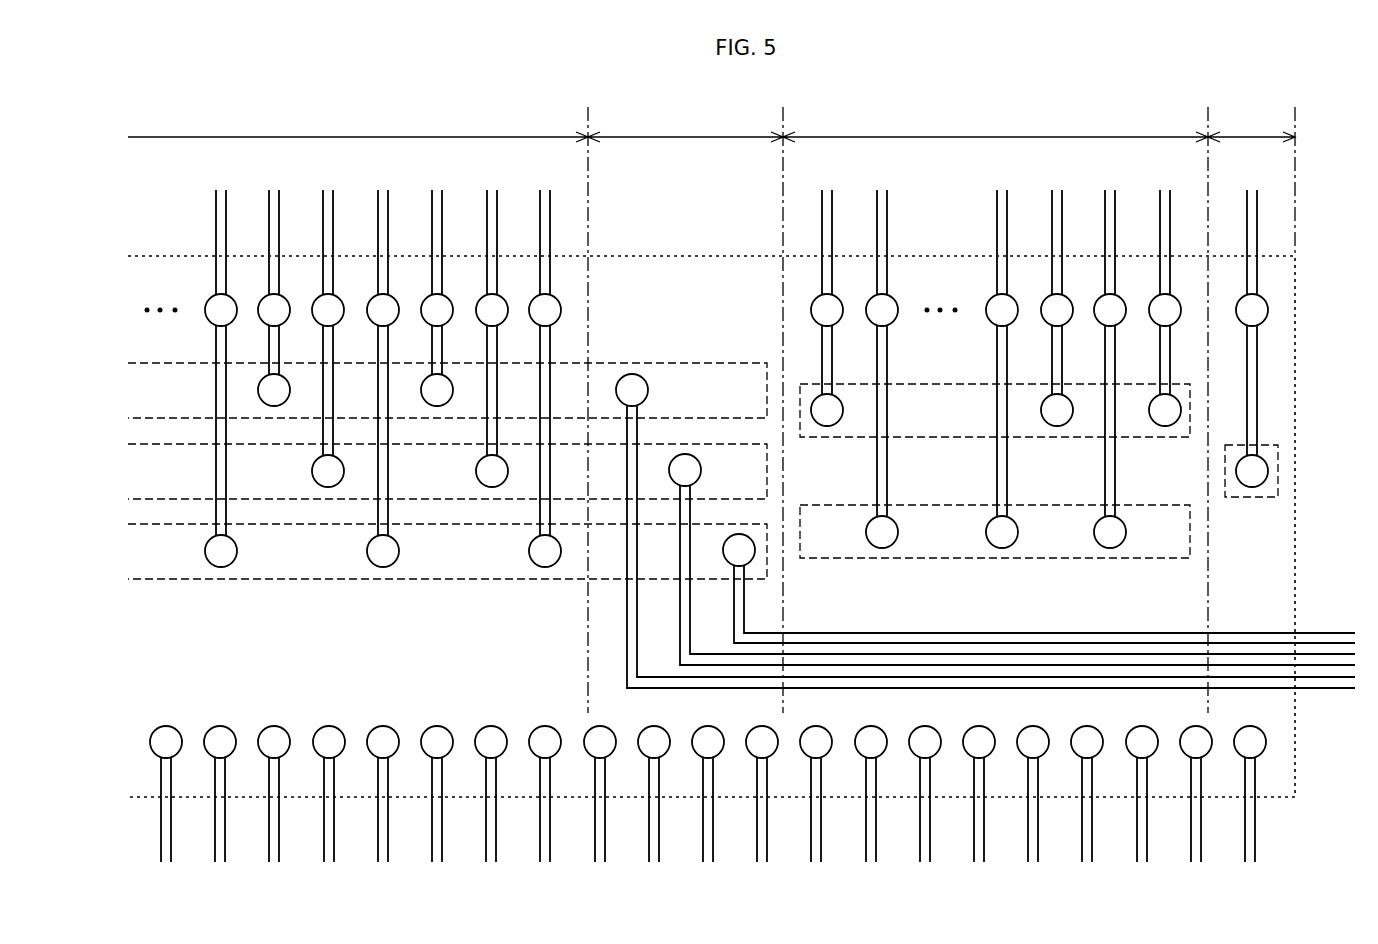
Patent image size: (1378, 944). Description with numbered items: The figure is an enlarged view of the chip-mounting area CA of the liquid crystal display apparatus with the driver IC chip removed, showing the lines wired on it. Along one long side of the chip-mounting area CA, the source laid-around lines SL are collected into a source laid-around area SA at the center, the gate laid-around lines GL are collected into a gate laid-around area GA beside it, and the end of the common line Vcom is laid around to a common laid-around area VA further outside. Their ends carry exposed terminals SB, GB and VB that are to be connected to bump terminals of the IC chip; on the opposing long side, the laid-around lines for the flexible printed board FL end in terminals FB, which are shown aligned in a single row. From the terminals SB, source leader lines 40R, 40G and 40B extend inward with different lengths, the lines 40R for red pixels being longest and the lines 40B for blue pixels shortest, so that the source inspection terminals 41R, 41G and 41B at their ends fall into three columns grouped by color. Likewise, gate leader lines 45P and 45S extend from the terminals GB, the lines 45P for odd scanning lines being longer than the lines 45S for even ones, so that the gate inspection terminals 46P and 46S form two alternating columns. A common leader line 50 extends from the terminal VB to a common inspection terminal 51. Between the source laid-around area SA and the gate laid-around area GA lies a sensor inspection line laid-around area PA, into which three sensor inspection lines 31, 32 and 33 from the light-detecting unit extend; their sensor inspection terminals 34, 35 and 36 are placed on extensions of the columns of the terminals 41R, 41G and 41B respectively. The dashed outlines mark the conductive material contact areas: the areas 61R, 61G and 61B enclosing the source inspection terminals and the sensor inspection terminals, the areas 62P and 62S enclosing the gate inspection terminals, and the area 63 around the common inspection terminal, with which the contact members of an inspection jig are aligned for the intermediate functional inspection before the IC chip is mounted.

The sensor inspection line 31 is at (905, 634).
The sensor inspection line 32 is at (942, 660).
The sensor inspection line 33 is at (983, 687).
The sensor inspection terminal 34 is at (734, 560).
The sensor inspection terminal 35 is at (693, 466).
The sensor inspection terminal 36 is at (640, 386).
The source leader line 40R is at (218, 404).
The source leader line 40B is at (432, 360).
The source leader line 40G is at (487, 360).
The source inspection terminal 41R is at (226, 560).
The source inspection terminal 41B is at (443, 398).
The source inspection terminal 41G is at (497, 479).
The gate leader line 45P is at (1053, 369).
The gate leader line 45S is at (1108, 369).
The gate inspection terminal 46P is at (833, 420).
The gate inspection terminal 46S is at (1116, 541).
The common leader line 50 is at (1248, 369).
The common inspection terminal 51 is at (1258, 480).
The area where the source inspection terminals 41R are arranged 61R is at (388, 580).
The area where the source inspection terminals 41G are arranged 61G is at (463, 500).
The area where the source inspection terminals 41B are arranged 61B is at (718, 362).
The area where the odd ordinal numbered gate inspection terminals 46P are arranged 62P is at (945, 440).
The area where the even ordinal numbered gate inspection terminals 46S are arranged 62S is at (1053, 560).
The conductive material contact area 63 is at (1279, 471).
The source laid-around line SL is at (225, 228).
The terminal to be connected to bump terminal SB is at (226, 306).
The gate laid-around line GL is at (831, 228).
The terminal to be connected to bump terminal GB is at (832, 306).
The terminal to be connected to bump terminal VB is at (1257, 306).
The common line Vcom is at (1257, 218).
The terminal to be connected to bump terminal FB is at (173, 745).
The laid-around line for flexible printed board FL is at (163, 818).
The chip-mounting area CA is at (1296, 391).
The source laid-around area SA is at (358, 410).
The sensor inspection line laid-around area PA is at (685, 410).
The gate laid-around area GA is at (995, 410).
The common laid-around area VA is at (1251, 181).